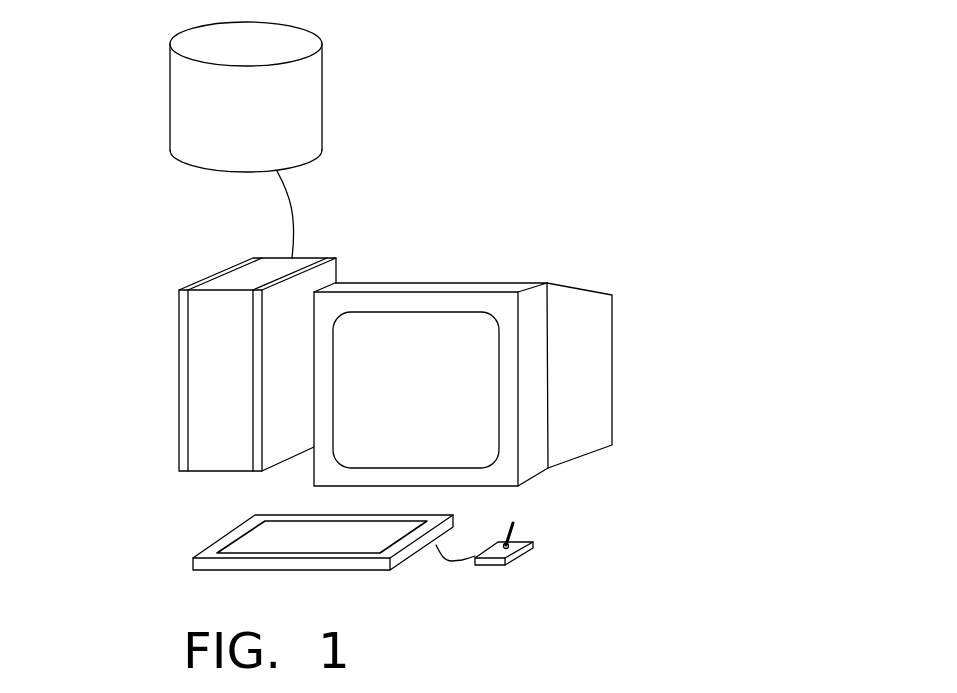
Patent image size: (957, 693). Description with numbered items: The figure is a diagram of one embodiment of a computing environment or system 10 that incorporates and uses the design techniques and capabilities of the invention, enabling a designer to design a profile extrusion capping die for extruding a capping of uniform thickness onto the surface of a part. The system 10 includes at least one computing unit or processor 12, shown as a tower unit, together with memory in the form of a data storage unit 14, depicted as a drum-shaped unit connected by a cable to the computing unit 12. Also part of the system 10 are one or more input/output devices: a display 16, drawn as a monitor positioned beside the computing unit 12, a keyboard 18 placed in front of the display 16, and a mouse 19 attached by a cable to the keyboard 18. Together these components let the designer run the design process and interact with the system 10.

The system 10 is at (522, 95).
The computing unit 12 is at (178, 423).
The data storage unit 14 is at (303, 105).
The display 16 is at (477, 283).
The keyboard 18 is at (207, 547).
The mouse 19 is at (515, 560).